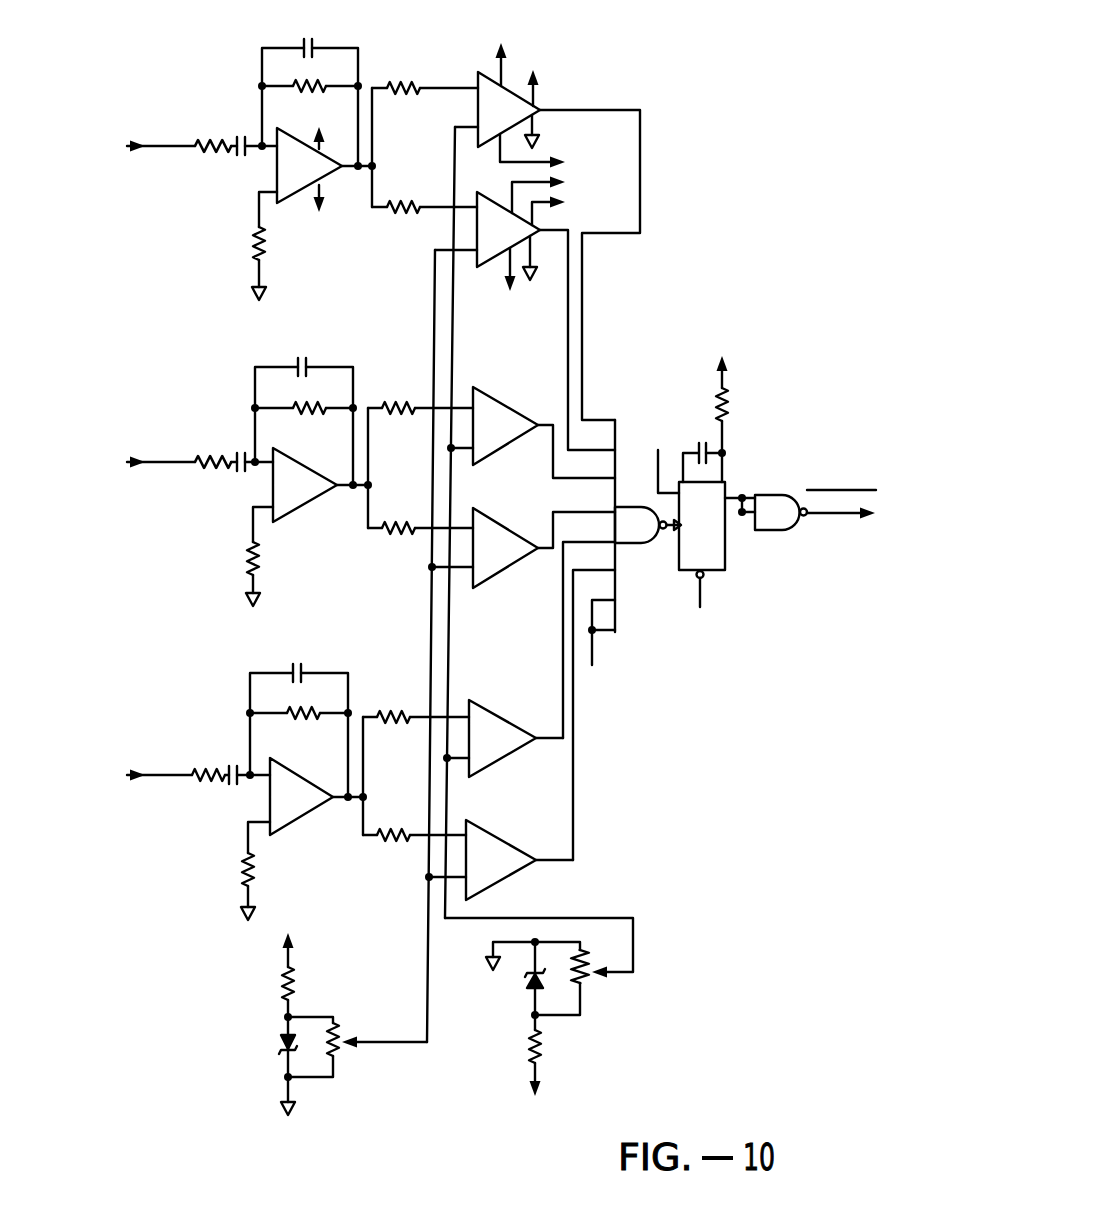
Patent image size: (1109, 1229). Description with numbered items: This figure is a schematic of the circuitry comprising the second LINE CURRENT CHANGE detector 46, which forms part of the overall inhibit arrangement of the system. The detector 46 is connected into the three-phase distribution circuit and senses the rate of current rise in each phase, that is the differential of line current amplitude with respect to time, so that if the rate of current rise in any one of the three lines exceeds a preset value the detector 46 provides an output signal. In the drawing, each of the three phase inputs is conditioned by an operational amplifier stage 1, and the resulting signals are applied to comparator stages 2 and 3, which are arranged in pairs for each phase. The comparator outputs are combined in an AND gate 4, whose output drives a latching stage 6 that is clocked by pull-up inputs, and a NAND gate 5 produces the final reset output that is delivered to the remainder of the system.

The operational amplifier 1 is at (306, 481).
The comparator 2 is at (506, 268).
The comparator 3 is at (502, 704).
The AND gate 4 is at (641, 526).
The NAND gate 5 is at (781, 512).
The flip-flop 6 is at (702, 530).
The second LINE CURRENT CHANGE detector 46 is at (502, 570).